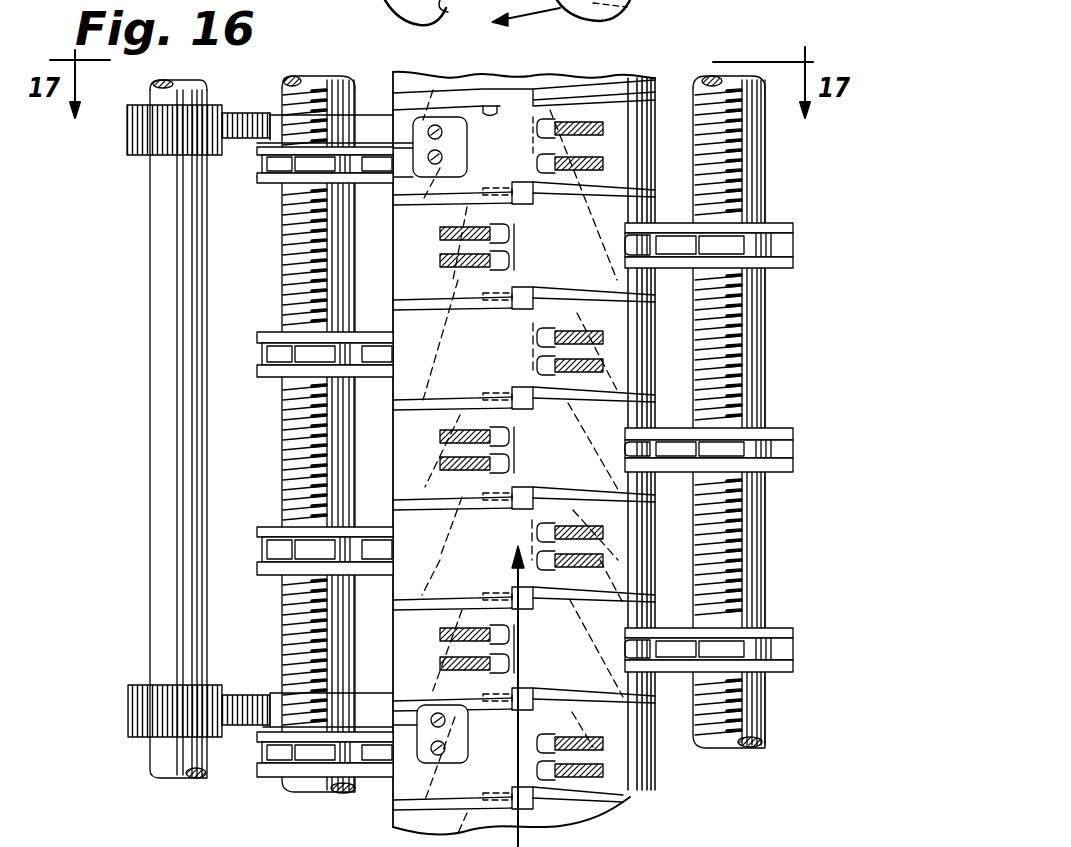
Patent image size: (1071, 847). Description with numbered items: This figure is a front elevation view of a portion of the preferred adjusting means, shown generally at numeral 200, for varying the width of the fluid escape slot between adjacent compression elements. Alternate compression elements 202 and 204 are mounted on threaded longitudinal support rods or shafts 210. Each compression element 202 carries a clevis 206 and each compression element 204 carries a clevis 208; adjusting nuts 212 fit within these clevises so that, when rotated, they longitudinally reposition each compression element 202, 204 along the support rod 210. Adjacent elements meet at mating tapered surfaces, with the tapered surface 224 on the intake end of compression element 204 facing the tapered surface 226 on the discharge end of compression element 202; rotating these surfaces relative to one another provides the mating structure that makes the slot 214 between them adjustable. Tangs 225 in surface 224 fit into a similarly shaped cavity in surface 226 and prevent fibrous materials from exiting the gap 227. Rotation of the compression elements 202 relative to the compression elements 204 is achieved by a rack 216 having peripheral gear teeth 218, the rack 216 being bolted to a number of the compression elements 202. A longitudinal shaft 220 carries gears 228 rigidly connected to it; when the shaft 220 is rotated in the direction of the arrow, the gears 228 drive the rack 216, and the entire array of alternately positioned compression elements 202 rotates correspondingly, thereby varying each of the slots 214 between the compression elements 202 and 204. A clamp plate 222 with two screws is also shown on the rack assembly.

The means for rotating the alternate compression elements 200 is at (815, 336).
The compression element 202 is at (675, 152).
The compression element 204 is at (678, 286).
The clevis 206 is at (782, 220).
The clevis 208 is at (267, 182).
The threaded longitudinal support rod 210 is at (293, 74).
The adjusting nut 212 is at (263, 160).
The slot 214 is at (278, 238).
The rack 216 is at (375, 117).
The peripheral gear teeth 218 is at (247, 113).
The longitudinal shaft 220 is at (150, 347).
The clamp plate 222 is at (445, 127).
The tapered surface 224 is at (608, 97).
The tang 225 is at (507, 118).
The tapered surface 226 is at (617, 110).
The gap 227 is at (538, 112).
The gear 228 is at (127, 132).